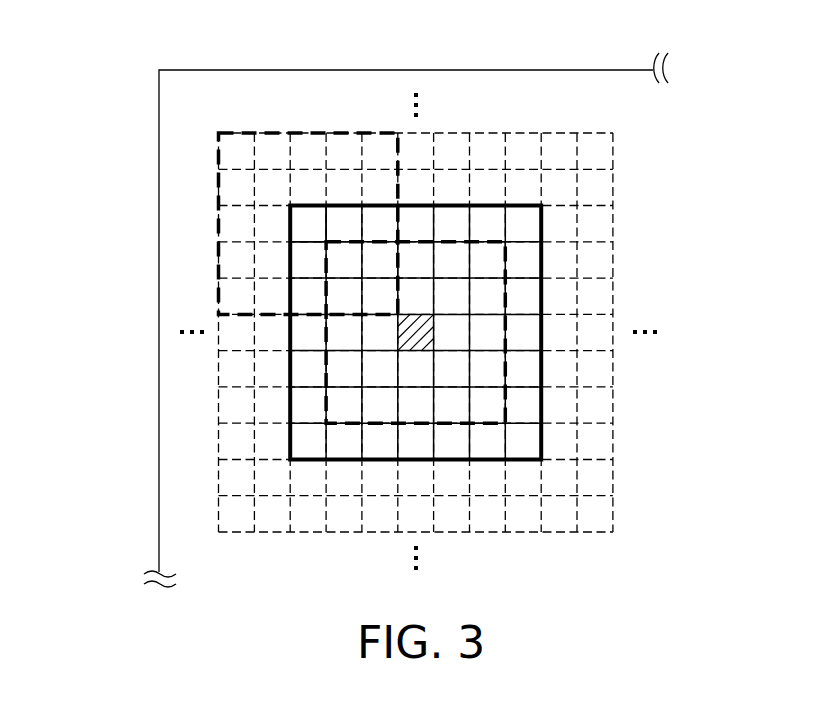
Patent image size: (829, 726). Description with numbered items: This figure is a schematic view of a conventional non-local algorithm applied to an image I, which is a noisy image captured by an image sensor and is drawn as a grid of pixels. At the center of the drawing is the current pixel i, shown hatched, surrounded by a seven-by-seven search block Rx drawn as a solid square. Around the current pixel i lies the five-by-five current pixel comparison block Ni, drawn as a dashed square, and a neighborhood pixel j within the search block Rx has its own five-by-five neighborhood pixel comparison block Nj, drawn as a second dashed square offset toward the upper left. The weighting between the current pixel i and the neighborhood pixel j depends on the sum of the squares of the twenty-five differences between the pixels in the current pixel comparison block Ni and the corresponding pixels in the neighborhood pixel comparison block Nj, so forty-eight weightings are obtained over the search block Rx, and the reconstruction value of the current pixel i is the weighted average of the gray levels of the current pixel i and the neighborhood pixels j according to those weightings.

The image I is at (159, 167).
The search block Rx is at (523, 205).
The neighborhood pixel j is at (307, 222).
The current pixel i is at (418, 331).
The neighborhood pixel comparison block Nj is at (242, 133).
The current pixel comparison block Ni is at (507, 272).